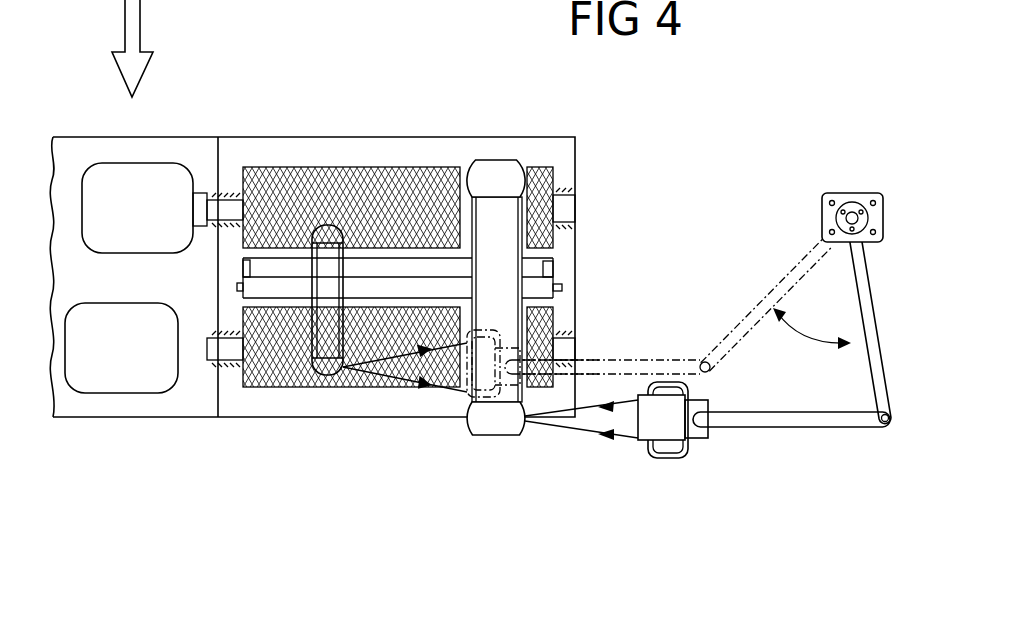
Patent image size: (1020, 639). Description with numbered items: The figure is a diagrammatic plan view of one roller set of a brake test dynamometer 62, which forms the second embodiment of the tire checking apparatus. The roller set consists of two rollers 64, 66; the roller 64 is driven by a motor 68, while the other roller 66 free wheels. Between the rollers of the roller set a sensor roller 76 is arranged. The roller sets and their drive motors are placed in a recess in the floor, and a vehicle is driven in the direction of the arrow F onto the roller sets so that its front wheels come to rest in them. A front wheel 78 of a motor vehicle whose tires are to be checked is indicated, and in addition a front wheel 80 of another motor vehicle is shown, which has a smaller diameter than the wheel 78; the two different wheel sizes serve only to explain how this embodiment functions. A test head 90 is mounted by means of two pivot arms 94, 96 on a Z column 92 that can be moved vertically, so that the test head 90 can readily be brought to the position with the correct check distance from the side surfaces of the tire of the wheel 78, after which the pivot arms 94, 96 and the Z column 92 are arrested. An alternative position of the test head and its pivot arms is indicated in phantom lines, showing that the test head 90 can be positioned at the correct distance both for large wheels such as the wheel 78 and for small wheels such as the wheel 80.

The arrow indicating vehicle drive-on direction F is at (140, 33).
The brake test dynamometer 62 is at (286, 112).
The roller 64 is at (373, 178).
The roller 66 is at (270, 378).
The motor 68 is at (158, 175).
The sensor roller 76 is at (243, 262).
The front wheel 78 is at (497, 172).
The front wheel 80 is at (327, 363).
The test head 90 is at (650, 432).
The Z column 92 is at (850, 212).
The pivot arm 94 is at (868, 305).
The pivot arm 96 is at (820, 423).